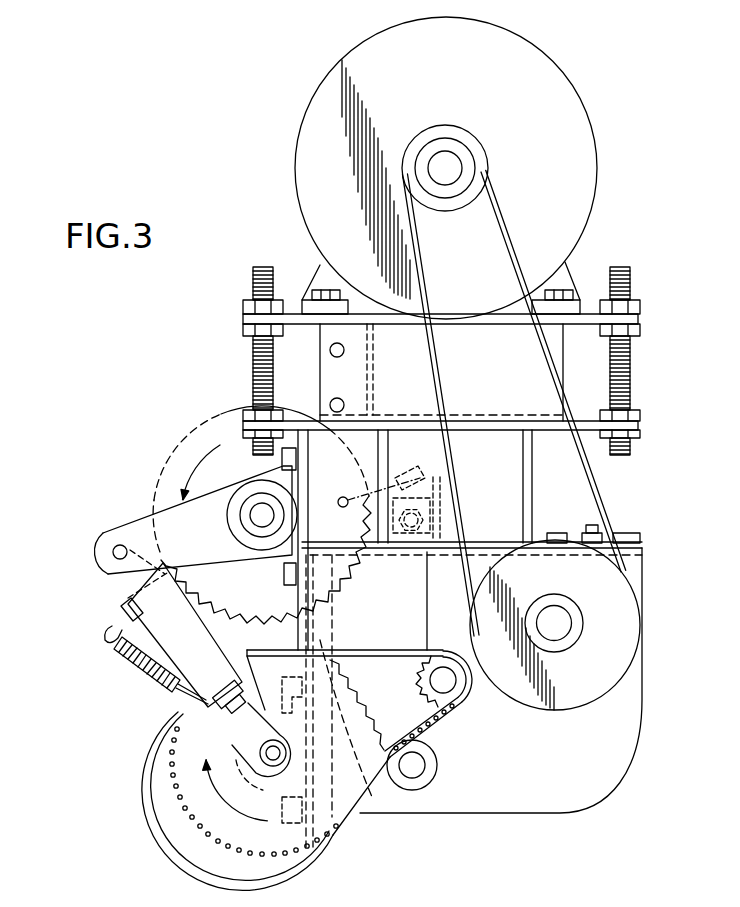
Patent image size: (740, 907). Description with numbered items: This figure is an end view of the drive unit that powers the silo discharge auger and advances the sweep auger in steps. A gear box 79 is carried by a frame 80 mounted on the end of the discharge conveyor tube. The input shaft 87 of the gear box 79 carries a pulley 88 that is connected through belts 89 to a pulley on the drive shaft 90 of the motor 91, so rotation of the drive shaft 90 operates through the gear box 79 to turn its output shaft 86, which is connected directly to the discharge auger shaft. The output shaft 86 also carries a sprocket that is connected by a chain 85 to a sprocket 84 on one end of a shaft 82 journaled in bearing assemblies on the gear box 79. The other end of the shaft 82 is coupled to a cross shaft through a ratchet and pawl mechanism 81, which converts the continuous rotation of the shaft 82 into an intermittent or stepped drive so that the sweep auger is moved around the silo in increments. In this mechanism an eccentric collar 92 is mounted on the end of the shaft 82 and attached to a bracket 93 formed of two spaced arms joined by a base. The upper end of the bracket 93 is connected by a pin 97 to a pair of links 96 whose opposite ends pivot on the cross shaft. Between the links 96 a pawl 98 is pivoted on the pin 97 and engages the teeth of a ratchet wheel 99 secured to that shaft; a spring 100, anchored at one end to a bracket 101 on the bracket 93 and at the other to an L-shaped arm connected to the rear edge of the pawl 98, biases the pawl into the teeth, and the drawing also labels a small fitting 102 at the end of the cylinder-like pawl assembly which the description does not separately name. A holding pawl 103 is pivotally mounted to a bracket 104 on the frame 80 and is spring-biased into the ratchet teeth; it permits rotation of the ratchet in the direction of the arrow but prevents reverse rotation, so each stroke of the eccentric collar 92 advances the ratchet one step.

The gear box 79 is at (543, 807).
The frame 80 is at (573, 293).
The ratchet and pawl mechanism 81 is at (118, 612).
The shaft 82 is at (281, 753).
The sprocket 84 is at (190, 757).
The chain 85 is at (440, 720).
The output shaft 86 is at (438, 682).
The input shaft 87 is at (560, 630).
The pulley 88 is at (577, 697).
The belts 89 is at (438, 373).
The drive shaft 90 is at (440, 163).
The motor 91 is at (587, 180).
The eccentric collar 92 is at (243, 753).
The bracket 93 is at (212, 630).
The links 96 is at (148, 533).
The pin 97 is at (115, 548).
The pawl 98 is at (165, 574).
The ratchet wheel 99 is at (187, 448).
The spring 100 is at (143, 678).
The bracket 101 is at (183, 705).
The bracket 102 is at (110, 628).
The holding pawl 103 is at (391, 472).
The bracket 104 is at (427, 540).